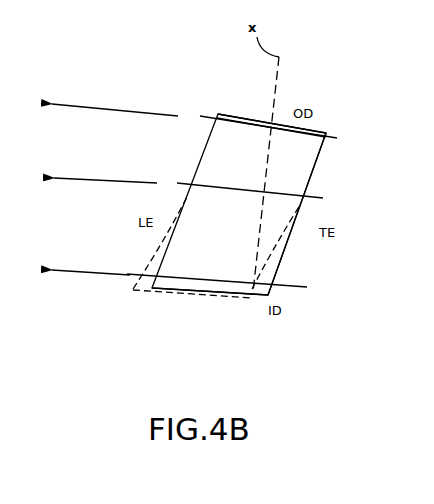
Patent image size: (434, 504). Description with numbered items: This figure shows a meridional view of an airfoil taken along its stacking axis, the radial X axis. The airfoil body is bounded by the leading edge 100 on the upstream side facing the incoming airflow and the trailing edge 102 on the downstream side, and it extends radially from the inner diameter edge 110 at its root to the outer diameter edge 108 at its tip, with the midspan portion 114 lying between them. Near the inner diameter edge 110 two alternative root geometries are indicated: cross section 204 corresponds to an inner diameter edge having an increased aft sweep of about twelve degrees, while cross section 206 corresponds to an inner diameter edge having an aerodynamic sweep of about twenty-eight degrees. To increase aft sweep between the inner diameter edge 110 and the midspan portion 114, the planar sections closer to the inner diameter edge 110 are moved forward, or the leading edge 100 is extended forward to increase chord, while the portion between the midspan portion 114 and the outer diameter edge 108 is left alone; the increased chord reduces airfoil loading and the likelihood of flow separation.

The leading edge 100 is at (197, 170).
The trailing edge 102 is at (313, 172).
The outer diameter edge 108 is at (315, 127).
The inner diameter edge 110 is at (212, 296).
The midspan portion 114 is at (318, 200).
The cross section 204 is at (125, 291).
The cross section 206 is at (160, 258).